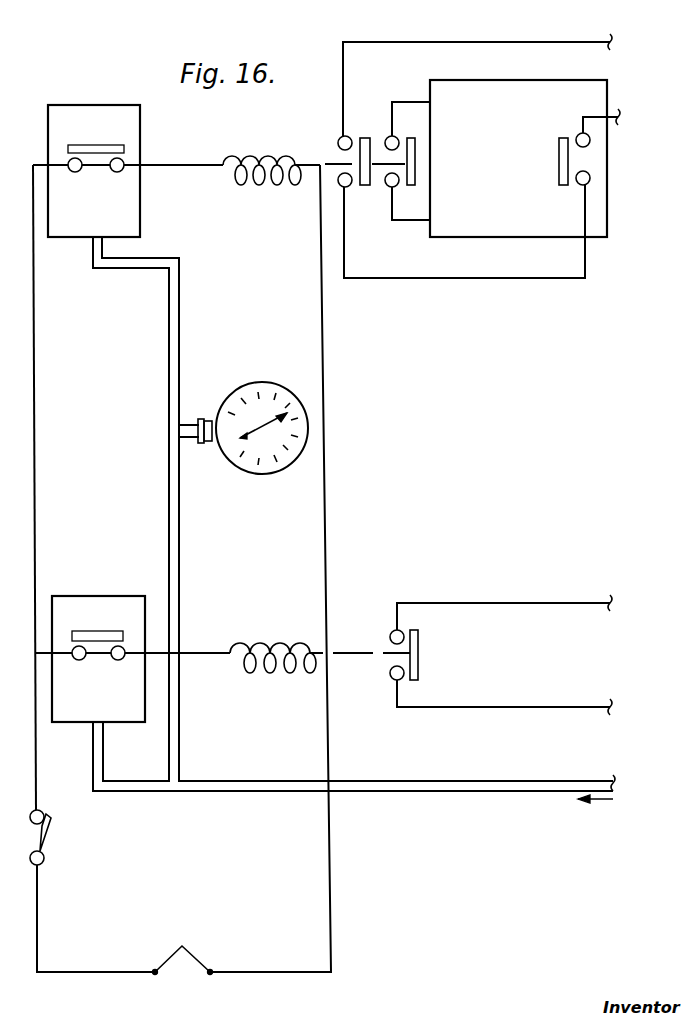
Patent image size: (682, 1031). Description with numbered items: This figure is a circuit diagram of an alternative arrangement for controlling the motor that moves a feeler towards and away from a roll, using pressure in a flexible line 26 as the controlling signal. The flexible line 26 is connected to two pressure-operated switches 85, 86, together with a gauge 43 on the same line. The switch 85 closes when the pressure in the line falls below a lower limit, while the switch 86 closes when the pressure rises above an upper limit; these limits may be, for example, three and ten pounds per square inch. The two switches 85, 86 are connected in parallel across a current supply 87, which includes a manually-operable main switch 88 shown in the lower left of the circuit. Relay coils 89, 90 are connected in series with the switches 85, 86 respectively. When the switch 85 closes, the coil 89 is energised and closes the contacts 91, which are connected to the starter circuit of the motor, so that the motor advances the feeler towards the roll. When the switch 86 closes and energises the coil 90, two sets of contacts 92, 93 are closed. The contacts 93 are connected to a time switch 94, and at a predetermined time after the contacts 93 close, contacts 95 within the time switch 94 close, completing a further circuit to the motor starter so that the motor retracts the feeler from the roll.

The flexible line 26 is at (405, 790).
The pressure gauge 43 is at (262, 405).
The pressure-operated switch 85 is at (80, 706).
The pressure-operated switch 86 is at (77, 117).
The current supply 87 is at (183, 946).
The main switch 88 is at (46, 838).
The relay coil 89 is at (283, 668).
The relay coil 90 is at (236, 155).
The contacts 91 is at (403, 672).
The contacts 92 is at (346, 185).
The contacts 93 is at (399, 180).
The time switch 94 is at (490, 88).
The contacts 95 is at (576, 178).